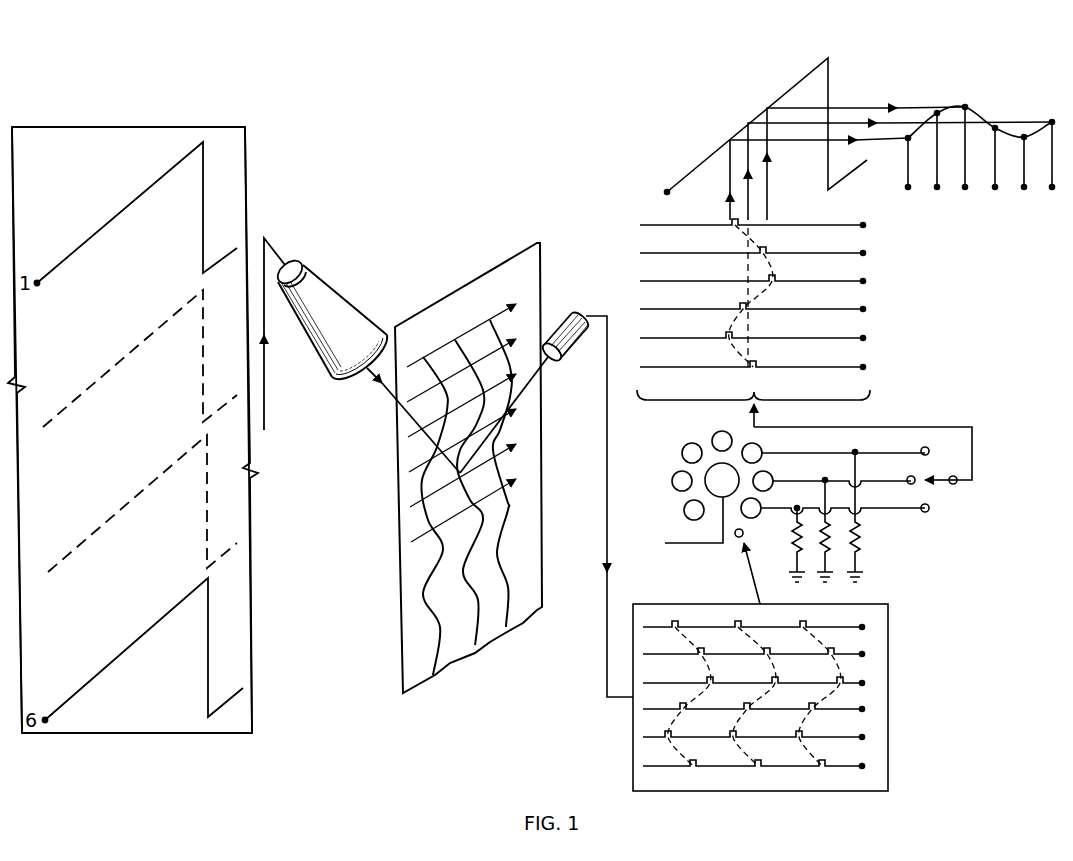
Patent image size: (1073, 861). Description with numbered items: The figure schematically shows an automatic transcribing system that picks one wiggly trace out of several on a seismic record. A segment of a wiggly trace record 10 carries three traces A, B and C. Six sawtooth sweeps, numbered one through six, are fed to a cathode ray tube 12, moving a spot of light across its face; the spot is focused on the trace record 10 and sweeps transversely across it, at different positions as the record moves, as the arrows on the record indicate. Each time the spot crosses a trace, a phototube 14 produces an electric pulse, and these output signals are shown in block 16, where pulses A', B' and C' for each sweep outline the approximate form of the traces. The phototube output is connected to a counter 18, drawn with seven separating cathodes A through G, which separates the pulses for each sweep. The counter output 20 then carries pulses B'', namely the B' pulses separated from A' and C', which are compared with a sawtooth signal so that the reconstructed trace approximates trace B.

The wiggly trace record 10 is at (403, 512).
The cathode ray tube 12 is at (345, 302).
The phototube 14 is at (570, 348).
The block of phototube output signals 16 is at (852, 604).
The counter 18 is at (652, 485).
The counter output 20 is at (919, 308).